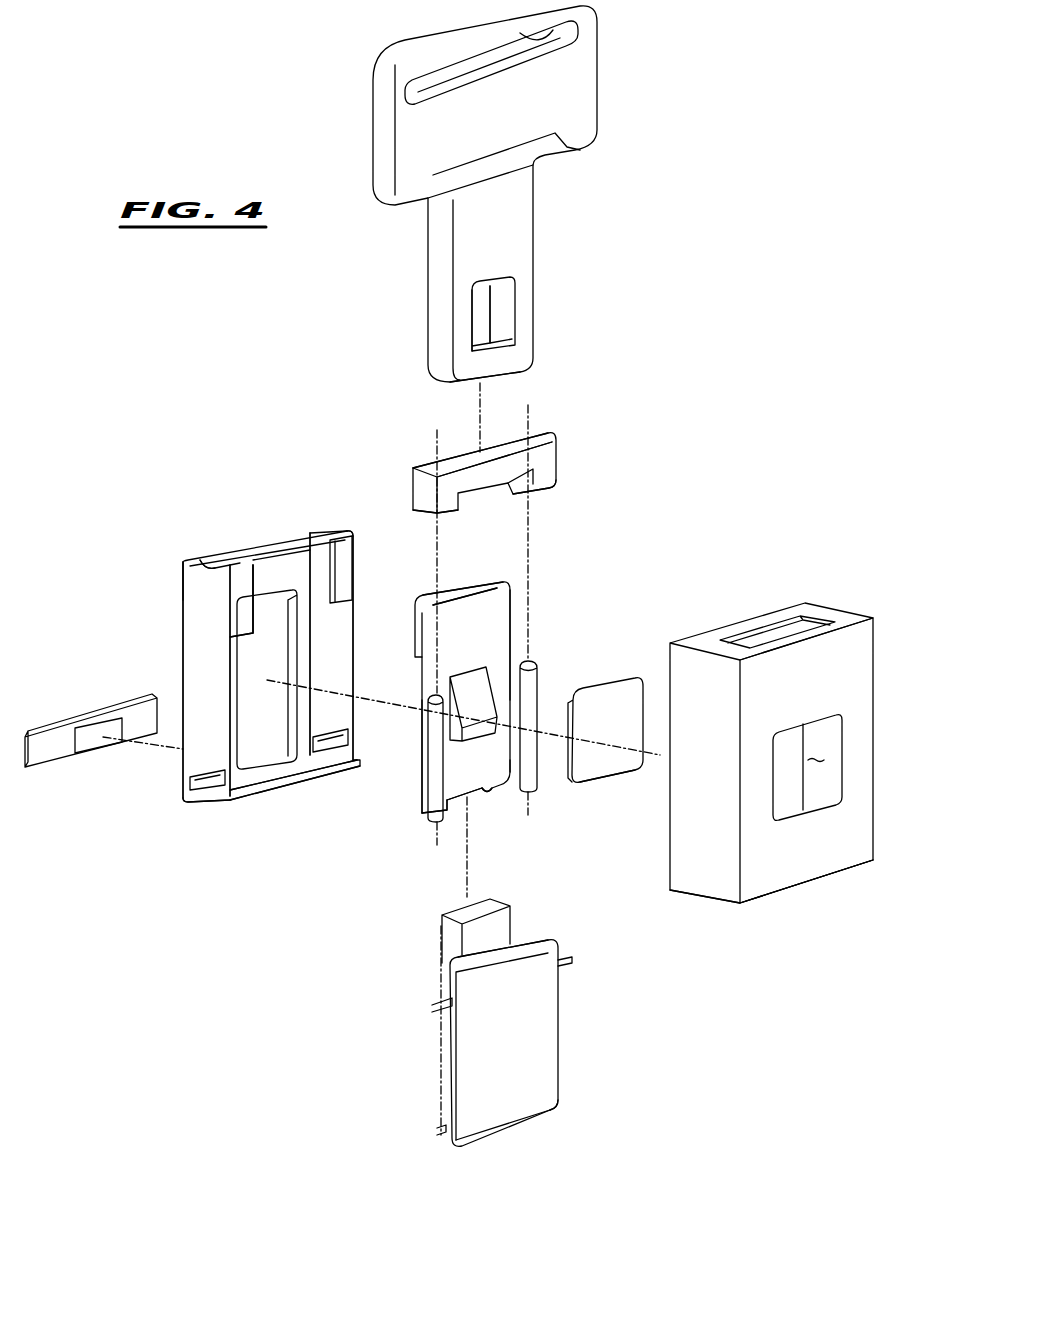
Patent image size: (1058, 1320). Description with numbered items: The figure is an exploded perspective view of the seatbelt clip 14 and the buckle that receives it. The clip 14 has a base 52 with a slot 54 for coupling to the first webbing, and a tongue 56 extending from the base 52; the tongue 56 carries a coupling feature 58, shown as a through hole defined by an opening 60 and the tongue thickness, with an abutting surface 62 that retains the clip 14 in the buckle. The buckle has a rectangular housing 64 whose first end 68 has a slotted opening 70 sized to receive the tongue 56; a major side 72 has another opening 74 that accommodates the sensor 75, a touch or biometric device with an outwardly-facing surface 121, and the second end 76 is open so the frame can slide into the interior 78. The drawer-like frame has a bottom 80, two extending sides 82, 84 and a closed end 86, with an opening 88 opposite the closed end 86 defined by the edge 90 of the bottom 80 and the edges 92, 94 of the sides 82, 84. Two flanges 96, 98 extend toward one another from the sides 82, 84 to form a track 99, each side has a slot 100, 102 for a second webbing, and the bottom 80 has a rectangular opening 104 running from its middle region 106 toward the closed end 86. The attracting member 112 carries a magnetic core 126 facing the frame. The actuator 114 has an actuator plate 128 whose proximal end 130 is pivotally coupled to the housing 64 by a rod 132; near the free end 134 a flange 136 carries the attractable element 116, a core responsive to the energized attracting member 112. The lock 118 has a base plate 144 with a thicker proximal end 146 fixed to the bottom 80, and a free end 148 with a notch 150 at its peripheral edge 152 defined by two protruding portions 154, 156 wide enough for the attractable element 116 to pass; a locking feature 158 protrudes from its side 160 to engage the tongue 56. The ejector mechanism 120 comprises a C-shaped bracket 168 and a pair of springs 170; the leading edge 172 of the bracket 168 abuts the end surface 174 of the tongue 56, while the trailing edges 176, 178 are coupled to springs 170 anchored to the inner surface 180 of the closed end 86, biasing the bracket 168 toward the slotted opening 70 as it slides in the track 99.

The clip 14 is at (634, 146).
The base 52 is at (585, 93).
The slot 54 is at (553, 40).
The tongue 56 is at (540, 215).
The coupling feature 58 is at (468, 324).
The opening 60 is at (503, 293).
The abutting surface 62 is at (488, 338).
The housing 64 is at (858, 651).
The first end 68 is at (845, 617).
The slotted opening 70 is at (770, 631).
The major side 72 is at (857, 837).
The opening 74 is at (833, 735).
The sensor 75 is at (616, 706).
The second end 76 is at (820, 880).
The interior 78 is at (836, 777).
The bottom 80 is at (273, 553).
The extending side 82 is at (213, 627).
The extending side 84 is at (331, 648).
The closed end 86 is at (278, 777).
The opening 88 is at (325, 540).
The edge 90 is at (222, 556).
The edge 92 is at (208, 556).
The edge 94 is at (342, 534).
The flange 96 is at (262, 575).
The flange 98 is at (343, 572).
The track 99 is at (224, 553).
The slot 100 is at (195, 783).
The slot 102 is at (330, 742).
The opening 104 is at (287, 614).
The middle region 106 is at (296, 568).
The attracting member 112 is at (47, 722).
The actuator 114 is at (567, 1061).
The attractable element 116 is at (446, 906).
The lock 118 is at (515, 591).
The ejector mechanism 120 is at (550, 432).
The outwardly-facing surface 121 is at (594, 765).
The magnetic core 126 is at (95, 742).
The actuator plate 128 is at (510, 1107).
The proximal end 130 is at (545, 948).
The rod 132 is at (573, 962).
The free end 134 is at (549, 1108).
The flange 136 is at (440, 1133).
The base plate 144 is at (495, 625).
The proximal end 146 is at (486, 600).
The free end 148 is at (472, 770).
The notch 150 is at (473, 803).
The peripheral edge 152 is at (490, 793).
The protruding portion 154 is at (515, 790).
The protruding portion 156 is at (422, 812).
The locking feature 158 is at (459, 670).
The side 160 is at (497, 652).
The C-shaped bracket 168 is at (545, 462).
The springs 170 is at (538, 680).
The leading edge 172 is at (458, 460).
The end surface 174 is at (520, 388).
The trailing edge 176 is at (447, 514).
The trailing edge 178 is at (545, 483).
The inner surface 180 is at (242, 788).